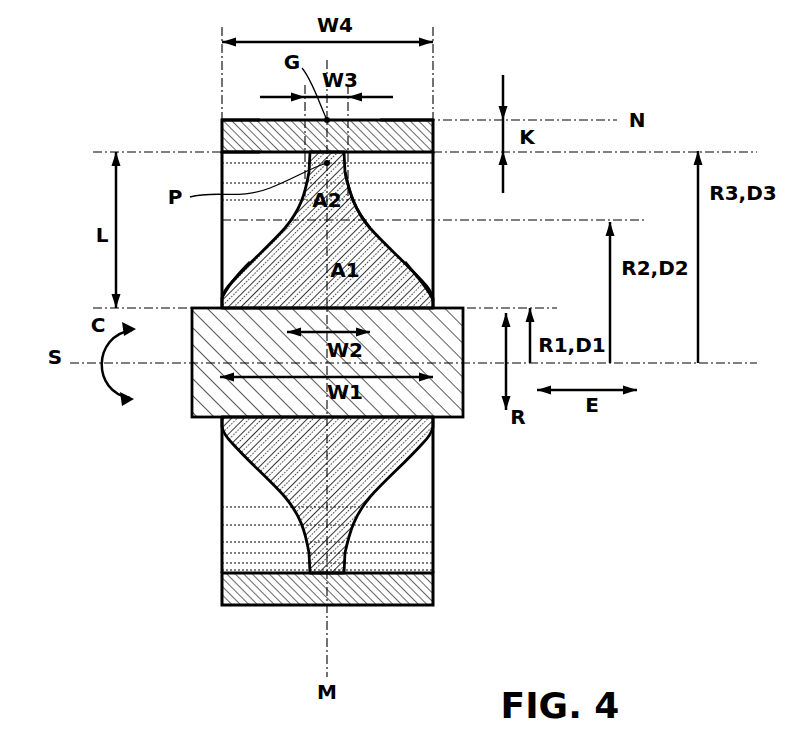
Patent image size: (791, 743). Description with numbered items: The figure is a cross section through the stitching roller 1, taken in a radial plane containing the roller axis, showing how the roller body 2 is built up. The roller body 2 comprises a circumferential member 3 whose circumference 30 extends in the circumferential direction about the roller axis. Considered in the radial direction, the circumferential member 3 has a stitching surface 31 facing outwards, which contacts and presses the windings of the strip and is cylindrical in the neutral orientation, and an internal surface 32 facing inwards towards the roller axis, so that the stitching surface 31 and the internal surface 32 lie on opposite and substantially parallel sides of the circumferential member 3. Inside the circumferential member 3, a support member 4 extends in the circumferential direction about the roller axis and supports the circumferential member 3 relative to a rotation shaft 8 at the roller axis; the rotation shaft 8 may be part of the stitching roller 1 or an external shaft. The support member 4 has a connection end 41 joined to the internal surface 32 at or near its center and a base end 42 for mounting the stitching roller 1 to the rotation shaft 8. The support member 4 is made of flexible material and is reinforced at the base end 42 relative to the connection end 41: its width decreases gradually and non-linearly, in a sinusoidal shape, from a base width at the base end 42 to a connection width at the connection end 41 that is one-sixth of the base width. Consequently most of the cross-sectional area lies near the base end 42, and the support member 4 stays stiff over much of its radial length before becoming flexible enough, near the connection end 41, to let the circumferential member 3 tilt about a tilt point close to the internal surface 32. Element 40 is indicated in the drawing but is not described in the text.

The stitching roller 1 is at (163, 79).
The roller body 2 is at (222, 245).
The circumferential member 3 is at (433, 160).
The support member 4 is at (398, 262).
The rotation shaft 8 is at (192, 395).
The circumference 30 is at (415, 120).
The stitching surface 31 is at (243, 120).
The internal surface 32 is at (222, 165).
The blade root 40 is at (233, 278).
The connection end 41 is at (350, 183).
The base end 42 is at (405, 285).